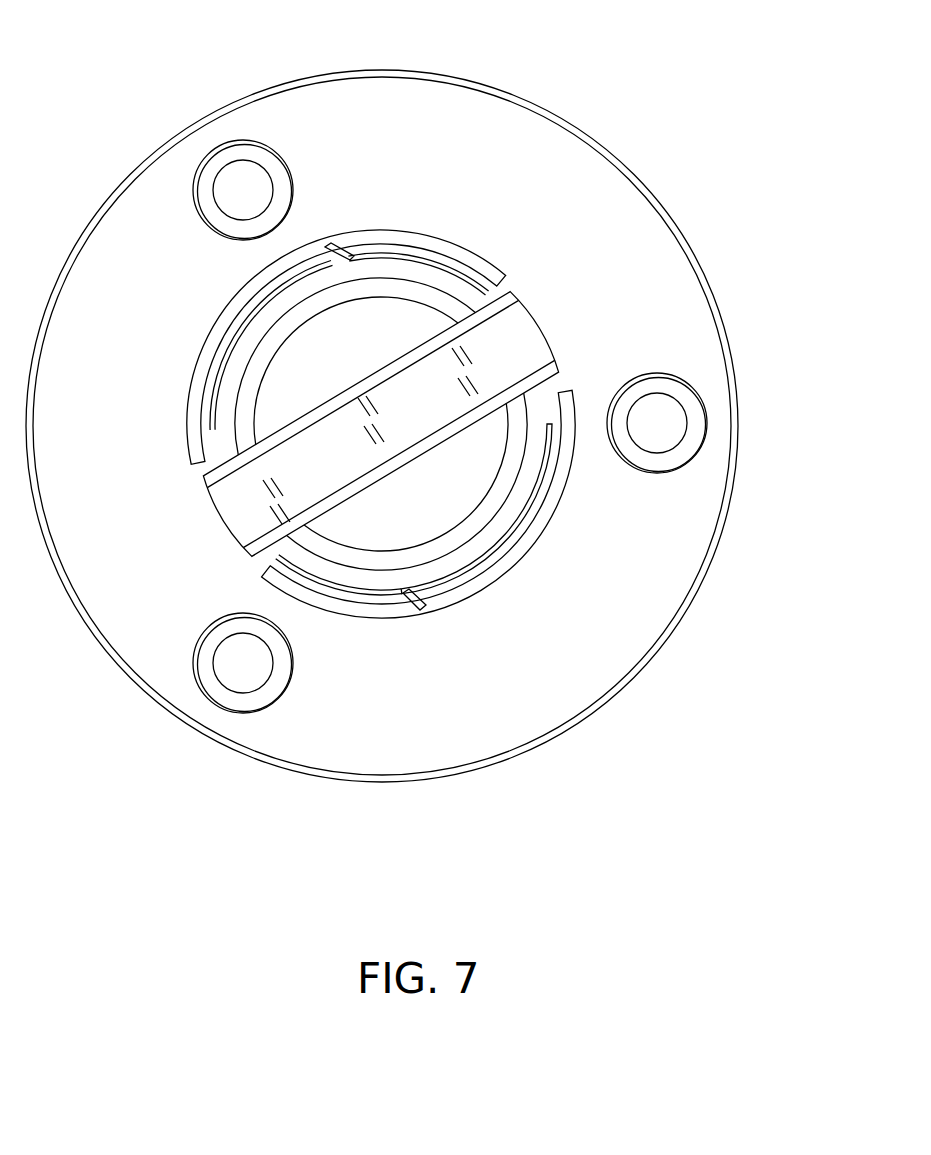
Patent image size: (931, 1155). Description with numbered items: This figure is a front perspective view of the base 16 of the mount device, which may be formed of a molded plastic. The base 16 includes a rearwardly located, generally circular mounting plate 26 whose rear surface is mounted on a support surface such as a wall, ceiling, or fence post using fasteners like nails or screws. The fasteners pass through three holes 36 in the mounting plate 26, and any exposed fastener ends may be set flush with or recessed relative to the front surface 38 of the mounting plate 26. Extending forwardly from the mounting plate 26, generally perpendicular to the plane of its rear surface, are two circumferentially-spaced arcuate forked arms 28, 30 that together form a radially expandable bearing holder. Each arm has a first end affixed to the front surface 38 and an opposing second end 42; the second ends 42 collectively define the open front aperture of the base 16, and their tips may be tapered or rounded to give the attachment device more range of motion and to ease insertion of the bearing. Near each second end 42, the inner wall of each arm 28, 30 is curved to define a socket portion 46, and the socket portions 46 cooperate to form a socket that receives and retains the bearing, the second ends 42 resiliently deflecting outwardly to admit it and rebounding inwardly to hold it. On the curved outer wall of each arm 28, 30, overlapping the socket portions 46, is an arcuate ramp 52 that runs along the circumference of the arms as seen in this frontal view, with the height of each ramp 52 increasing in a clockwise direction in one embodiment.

The base 16 is at (505, 85).
The mounting plate 26 is at (677, 298).
The front surface 38 is at (632, 289).
The holes 36 is at (243, 160).
The forked arm 28 is at (187, 430).
The forked arm 30 is at (258, 574).
The second end 42 is at (445, 258).
The arcuate ramp 52 is at (325, 247).
The socket portion 46 is at (347, 369).